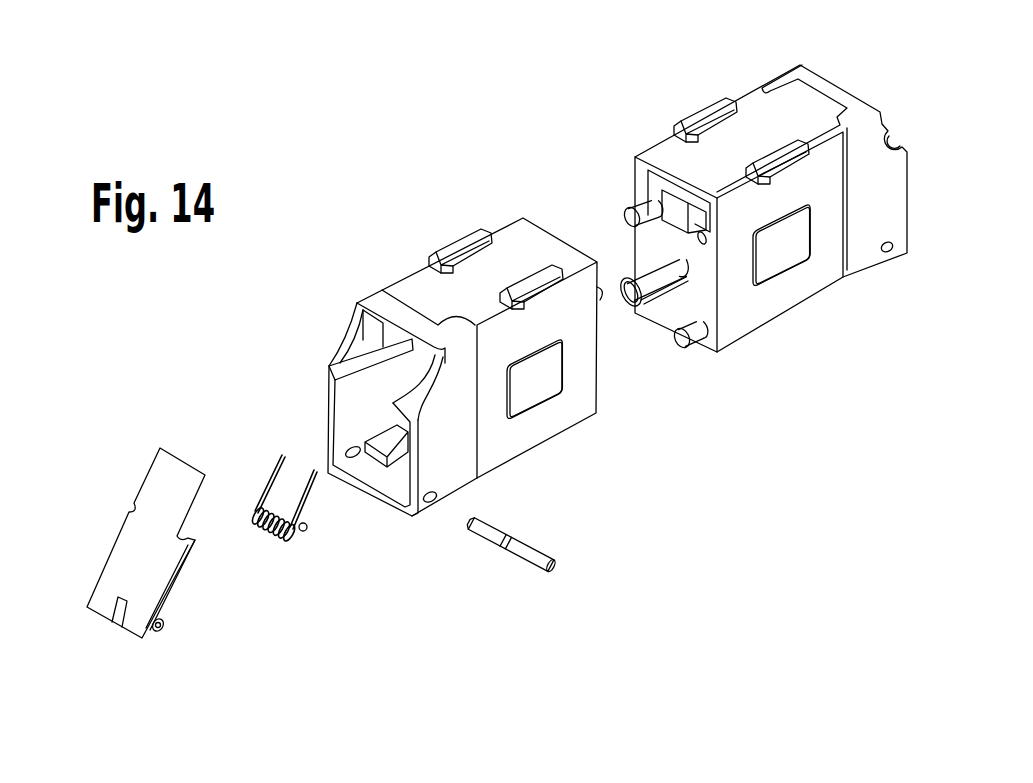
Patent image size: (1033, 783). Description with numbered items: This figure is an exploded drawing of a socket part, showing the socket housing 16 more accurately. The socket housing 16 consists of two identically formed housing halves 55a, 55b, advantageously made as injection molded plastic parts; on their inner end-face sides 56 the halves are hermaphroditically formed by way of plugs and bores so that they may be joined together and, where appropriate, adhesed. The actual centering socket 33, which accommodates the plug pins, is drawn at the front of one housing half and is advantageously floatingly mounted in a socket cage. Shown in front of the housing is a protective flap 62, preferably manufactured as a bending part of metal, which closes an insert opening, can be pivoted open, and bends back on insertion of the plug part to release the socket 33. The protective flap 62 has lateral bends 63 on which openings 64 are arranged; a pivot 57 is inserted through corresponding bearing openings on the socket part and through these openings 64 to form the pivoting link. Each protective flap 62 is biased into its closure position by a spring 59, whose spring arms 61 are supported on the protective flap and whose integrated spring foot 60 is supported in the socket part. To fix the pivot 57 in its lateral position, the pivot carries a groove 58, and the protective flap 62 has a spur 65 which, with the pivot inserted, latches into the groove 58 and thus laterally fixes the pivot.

The socket housing 16 is at (486, 155).
The housing half 55a is at (427, 290).
The housing half 55b is at (755, 100).
The inner end-face side 56 is at (645, 248).
The centering socket 33 is at (652, 278).
The pivot 57 is at (487, 532).
The groove 58 is at (518, 538).
The spring 59 is at (283, 542).
The spring foot 60 is at (306, 531).
The spring arms 61 is at (282, 455).
The protective flap 62 is at (158, 483).
The lateral bend 63 is at (188, 552).
The opening 64 is at (160, 632).
The spur 65 is at (117, 622).